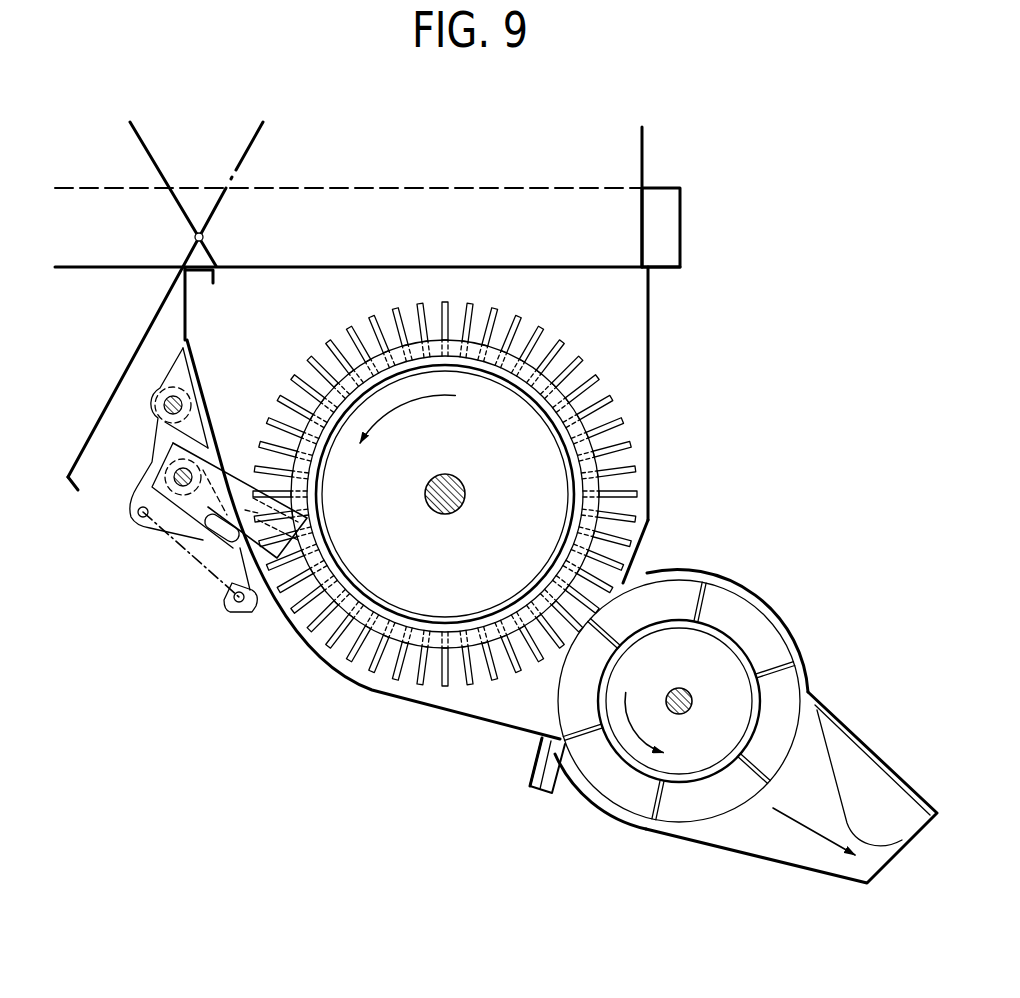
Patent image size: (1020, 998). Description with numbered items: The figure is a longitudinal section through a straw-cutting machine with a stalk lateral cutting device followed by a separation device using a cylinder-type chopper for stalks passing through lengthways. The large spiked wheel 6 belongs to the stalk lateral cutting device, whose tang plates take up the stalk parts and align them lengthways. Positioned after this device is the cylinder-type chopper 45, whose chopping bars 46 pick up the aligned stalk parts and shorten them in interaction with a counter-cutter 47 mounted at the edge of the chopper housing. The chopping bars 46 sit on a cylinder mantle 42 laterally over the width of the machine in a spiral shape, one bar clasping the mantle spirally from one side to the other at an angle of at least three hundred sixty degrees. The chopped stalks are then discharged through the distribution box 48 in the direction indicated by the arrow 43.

The toothed rotor 6 is at (420, 674).
The cylinder mantle 42 is at (753, 663).
The cylinder-type chopper 45 is at (708, 660).
The chopping bars 46 is at (622, 585).
The counter-cutter 47 is at (548, 785).
The distribution box 48 is at (813, 790).
The arrow 43 is at (777, 817).